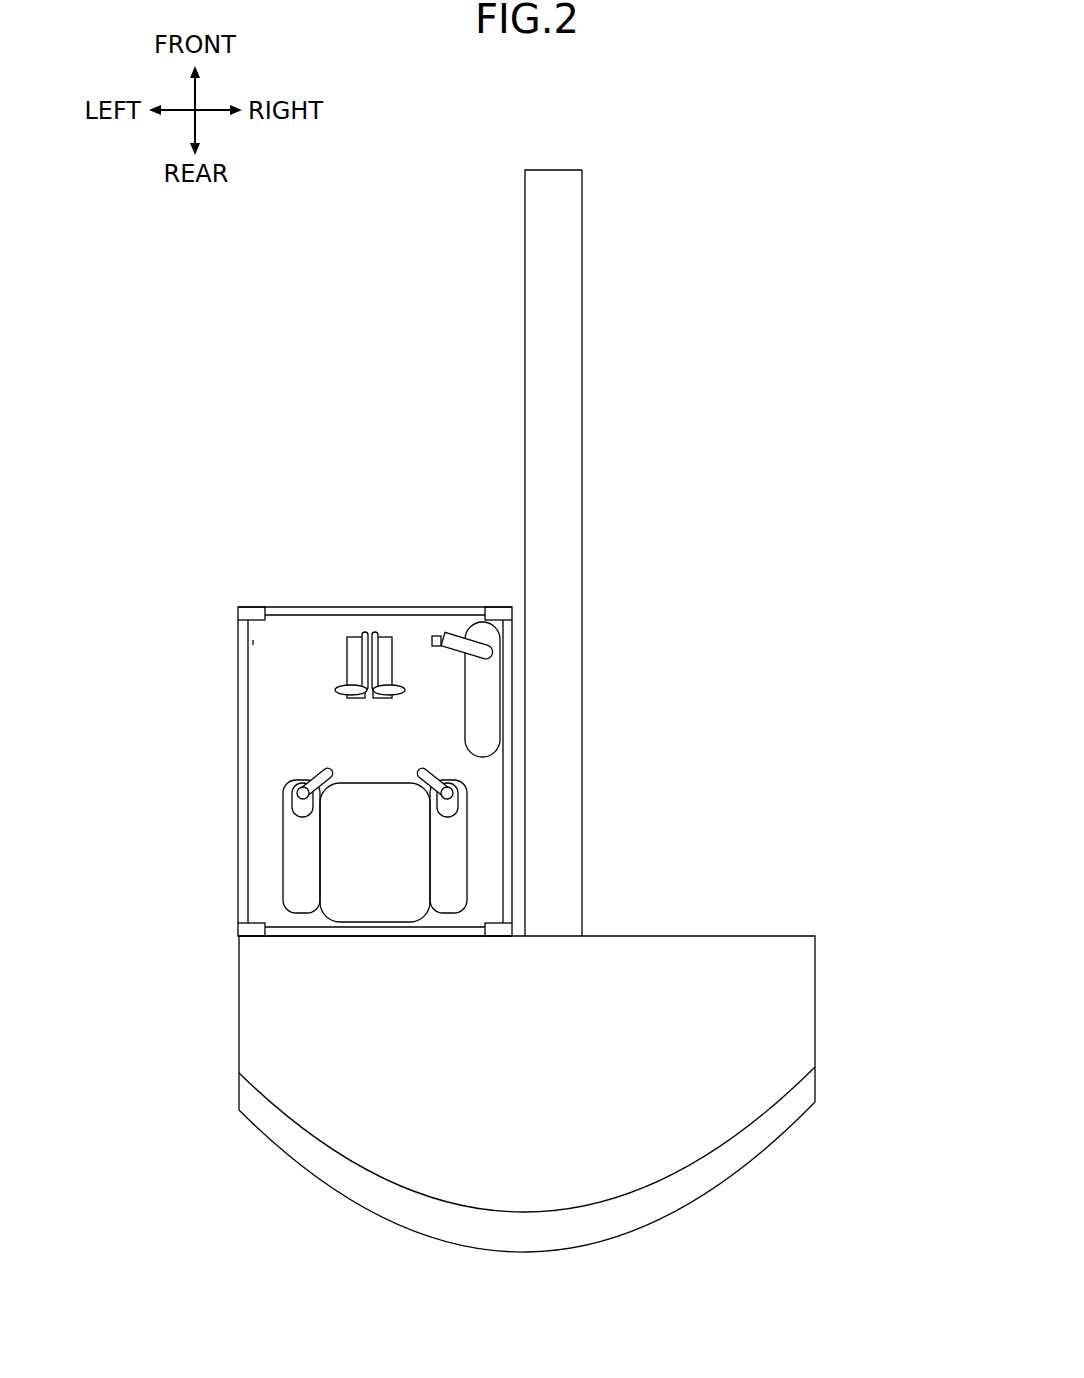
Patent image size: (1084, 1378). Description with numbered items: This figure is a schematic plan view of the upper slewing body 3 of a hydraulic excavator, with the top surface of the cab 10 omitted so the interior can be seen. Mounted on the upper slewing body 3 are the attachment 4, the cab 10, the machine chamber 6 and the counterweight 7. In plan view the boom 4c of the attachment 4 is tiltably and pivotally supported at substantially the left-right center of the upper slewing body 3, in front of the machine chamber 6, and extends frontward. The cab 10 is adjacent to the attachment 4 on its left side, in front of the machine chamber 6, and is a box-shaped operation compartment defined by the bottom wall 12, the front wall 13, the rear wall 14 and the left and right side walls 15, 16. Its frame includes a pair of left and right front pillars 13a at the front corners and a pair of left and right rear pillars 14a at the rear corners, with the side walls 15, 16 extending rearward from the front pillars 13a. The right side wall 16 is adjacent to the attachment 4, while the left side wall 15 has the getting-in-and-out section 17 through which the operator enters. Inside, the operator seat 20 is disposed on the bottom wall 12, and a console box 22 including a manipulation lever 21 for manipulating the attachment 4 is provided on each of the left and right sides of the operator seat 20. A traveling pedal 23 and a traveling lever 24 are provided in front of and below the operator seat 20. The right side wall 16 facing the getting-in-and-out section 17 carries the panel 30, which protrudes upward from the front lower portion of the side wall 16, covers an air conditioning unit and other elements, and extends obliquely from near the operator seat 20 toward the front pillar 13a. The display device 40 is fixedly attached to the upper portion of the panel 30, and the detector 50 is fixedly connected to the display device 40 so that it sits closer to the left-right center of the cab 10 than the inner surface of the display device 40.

The upper slewing body 3 is at (921, 76).
The attachment 4 is at (552, 138).
The boom 4c is at (583, 348).
The machine chamber 6 is at (805, 989).
The counterweight 7 is at (542, 1247).
The cab 10 is at (317, 492).
The bottom wall 12 is at (270, 685).
The front wall 13 is at (403, 607).
The front pillar 13a is at (238, 607).
The rear wall 14 is at (355, 937).
The rear pillar 14a is at (255, 937).
The left side wall 15 is at (238, 860).
The right side wall 16 is at (512, 872).
The getting-in-and-out section 17 is at (238, 715).
The operator seat 20 is at (405, 924).
The manipulation lever 21 is at (297, 782).
The console box 22 is at (283, 830).
The traveling pedal 23 is at (345, 645).
The traveling lever 24 is at (373, 636).
The panel 30 is at (488, 708).
The display device 40 is at (488, 648).
The detector 50 is at (437, 634).